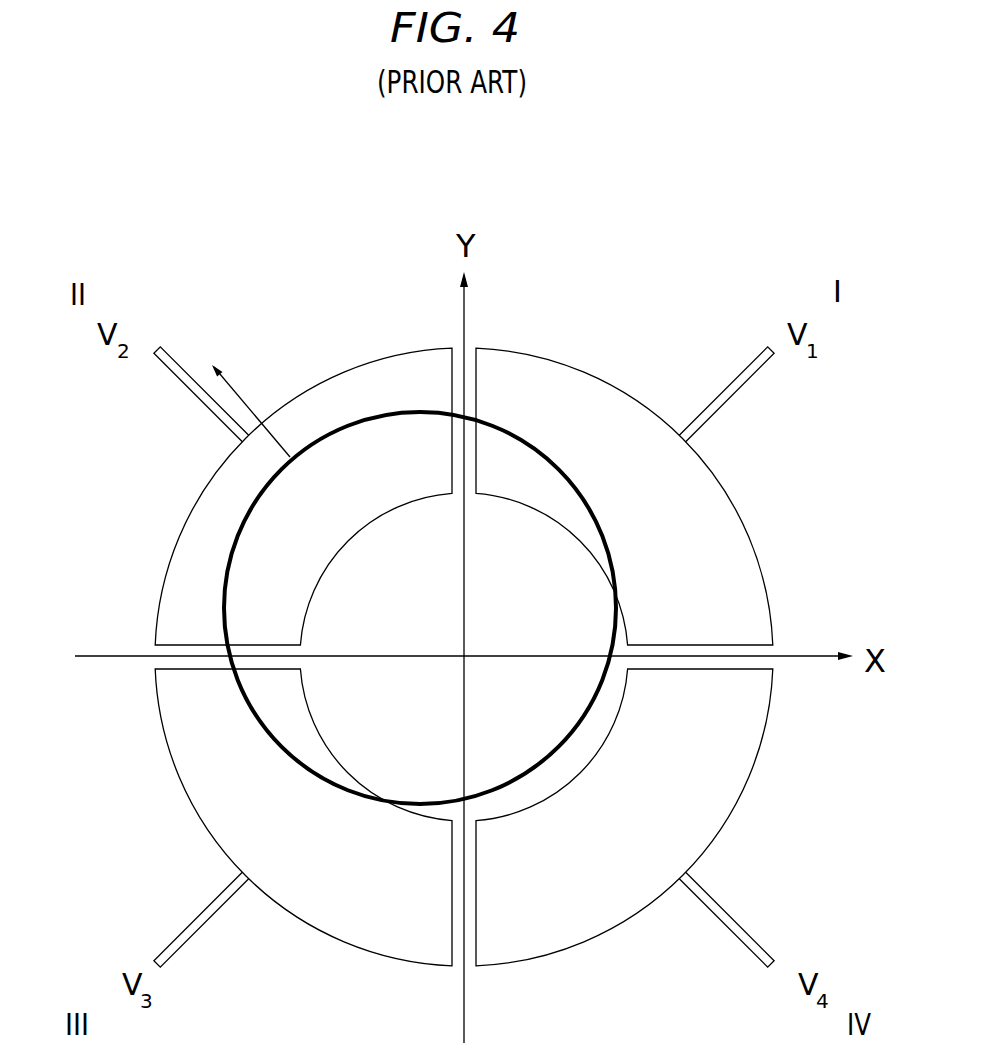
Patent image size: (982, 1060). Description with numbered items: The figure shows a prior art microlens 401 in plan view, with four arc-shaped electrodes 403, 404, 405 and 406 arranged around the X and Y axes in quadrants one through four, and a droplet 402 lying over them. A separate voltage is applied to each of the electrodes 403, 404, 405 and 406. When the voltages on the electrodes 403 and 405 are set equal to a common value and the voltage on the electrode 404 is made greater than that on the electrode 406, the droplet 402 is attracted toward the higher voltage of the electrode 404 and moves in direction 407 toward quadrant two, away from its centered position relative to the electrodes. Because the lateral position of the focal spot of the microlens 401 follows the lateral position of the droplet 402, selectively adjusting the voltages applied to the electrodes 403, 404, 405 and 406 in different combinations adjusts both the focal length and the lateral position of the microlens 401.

The microlens 401 is at (115, 203).
The droplet 402 is at (560, 467).
The electrode 403 is at (742, 518).
The electrode 404 is at (187, 520).
The electrode 405 is at (192, 797).
The electrode 406 is at (737, 797).
The direction 407 is at (238, 394).